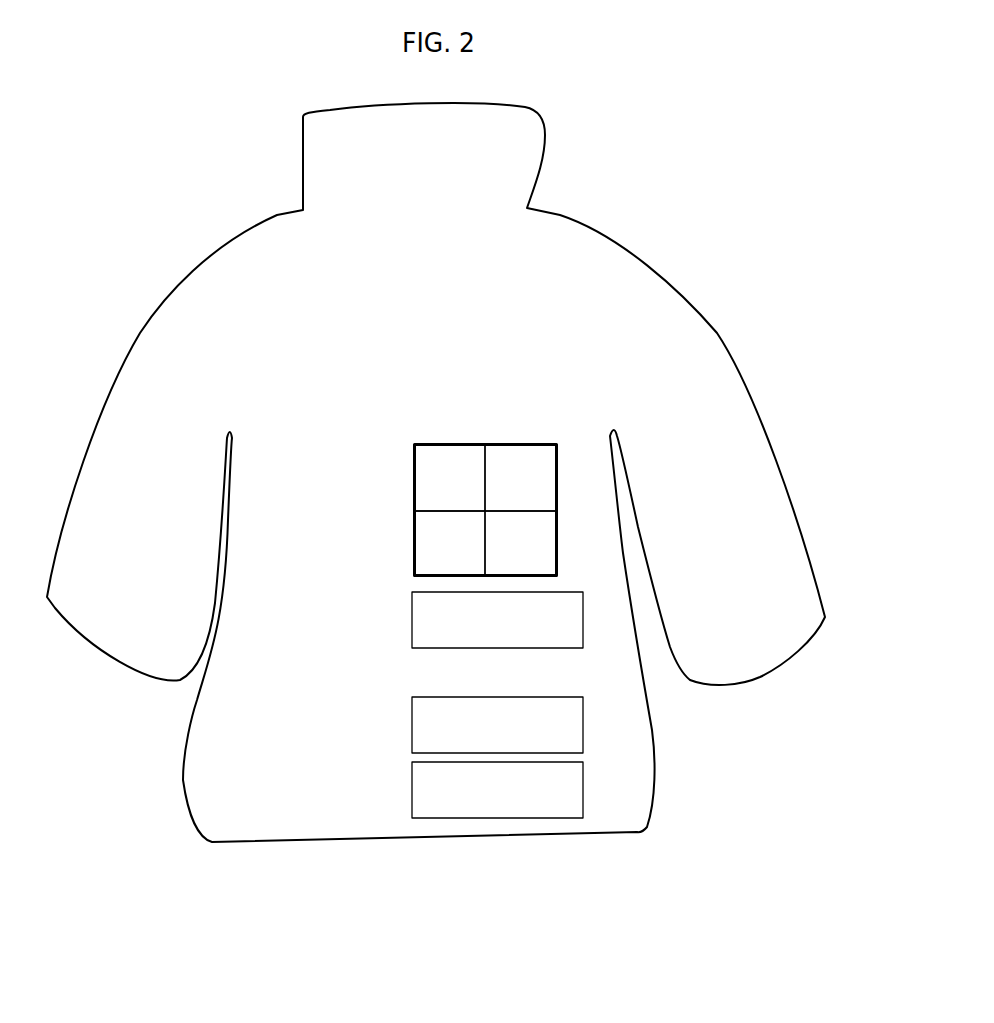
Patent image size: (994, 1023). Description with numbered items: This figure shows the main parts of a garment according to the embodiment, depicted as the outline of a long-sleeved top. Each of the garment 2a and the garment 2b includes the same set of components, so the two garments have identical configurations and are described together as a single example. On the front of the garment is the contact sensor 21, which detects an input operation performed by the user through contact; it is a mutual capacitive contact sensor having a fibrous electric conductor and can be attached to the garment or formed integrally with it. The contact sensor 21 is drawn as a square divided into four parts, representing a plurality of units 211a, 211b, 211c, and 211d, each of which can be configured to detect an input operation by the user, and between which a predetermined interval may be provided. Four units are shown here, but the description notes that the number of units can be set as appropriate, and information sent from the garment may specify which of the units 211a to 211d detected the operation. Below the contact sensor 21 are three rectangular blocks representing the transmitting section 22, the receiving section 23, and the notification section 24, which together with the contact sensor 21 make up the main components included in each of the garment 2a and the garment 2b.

The garment 2a is at (436, 472).
The garment 2b is at (600, 231).
The contact sensor 21 is at (527, 480).
The unit 211a is at (450, 472).
The unit 211b is at (527, 472).
The unit 211c is at (425, 563).
The unit 211d is at (533, 555).
The transmitting section 22 is at (583, 635).
The receiving section 23 is at (583, 738).
The notification section 24 is at (583, 805).